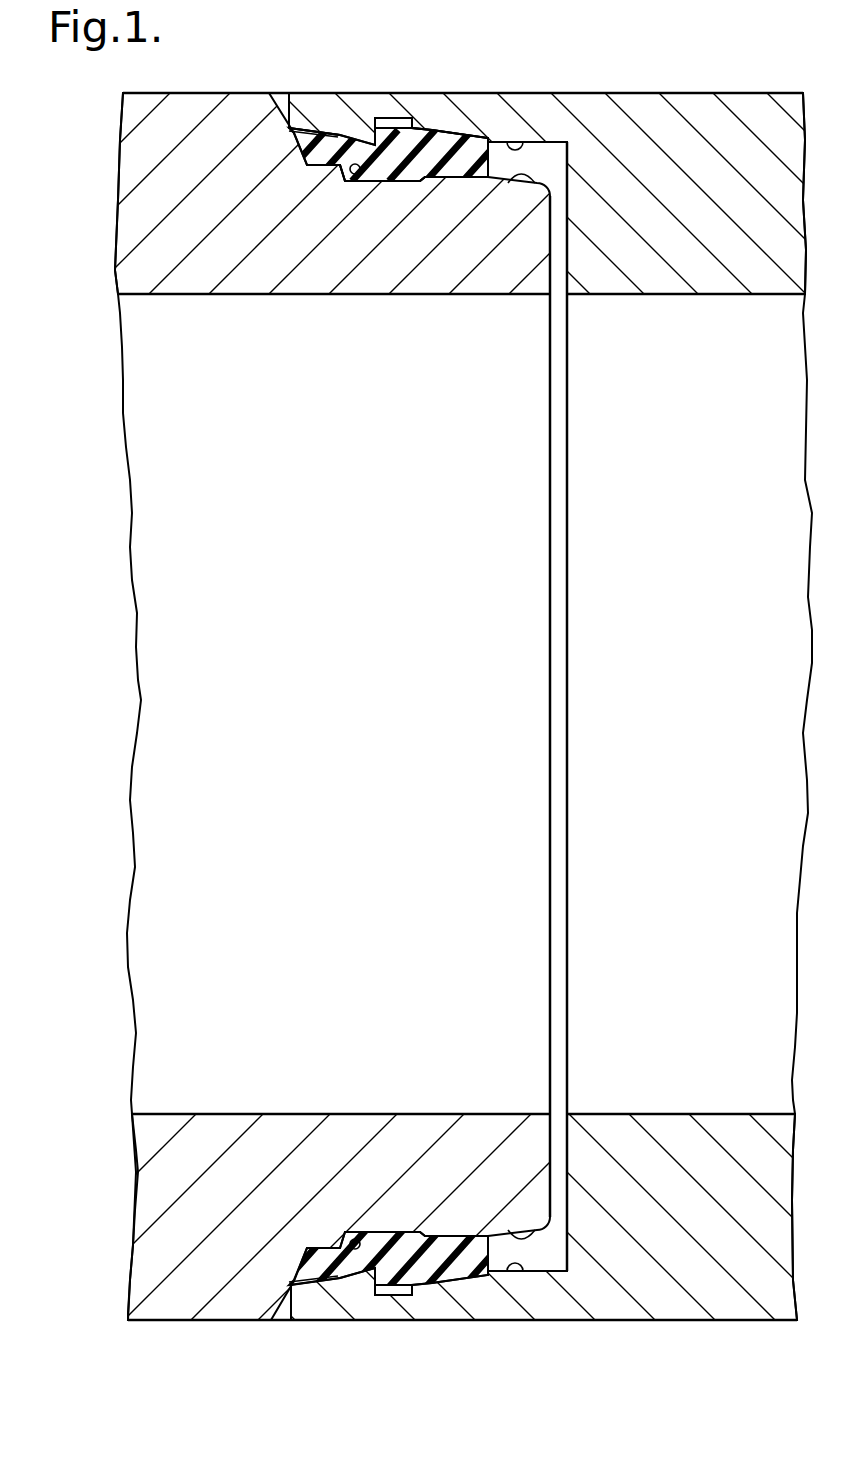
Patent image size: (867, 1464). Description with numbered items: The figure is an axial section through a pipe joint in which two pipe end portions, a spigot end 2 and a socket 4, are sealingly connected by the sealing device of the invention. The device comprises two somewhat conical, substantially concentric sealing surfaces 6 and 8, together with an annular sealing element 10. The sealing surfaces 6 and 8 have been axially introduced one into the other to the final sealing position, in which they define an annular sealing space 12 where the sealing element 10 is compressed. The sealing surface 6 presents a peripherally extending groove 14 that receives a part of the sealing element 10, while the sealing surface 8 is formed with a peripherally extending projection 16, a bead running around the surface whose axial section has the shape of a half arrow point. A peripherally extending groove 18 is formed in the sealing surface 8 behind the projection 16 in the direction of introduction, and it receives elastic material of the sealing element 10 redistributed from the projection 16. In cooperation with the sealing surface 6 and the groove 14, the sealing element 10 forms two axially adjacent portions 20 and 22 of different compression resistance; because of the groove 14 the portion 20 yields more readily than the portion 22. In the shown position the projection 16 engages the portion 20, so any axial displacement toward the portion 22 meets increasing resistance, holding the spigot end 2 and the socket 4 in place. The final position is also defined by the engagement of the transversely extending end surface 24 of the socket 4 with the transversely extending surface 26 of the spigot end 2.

The spigot end 2 is at (398, 253).
The socket 4 is at (478, 112).
The sealing surface 6 is at (518, 176).
The sealing surface 8 is at (530, 141).
The annular sealing element 10 is at (375, 142).
The annular sealing space 12 is at (567, 142).
The peripherally extending groove 14 is at (348, 166).
The peripherally extending projection 16 is at (375, 140).
The peripherally extending groove 18 is at (395, 128).
The portion 20 is at (372, 181).
The portion 22 is at (437, 182).
The transversely extending end surface 24 is at (289, 96).
The transversely extending surface 26 is at (284, 97).